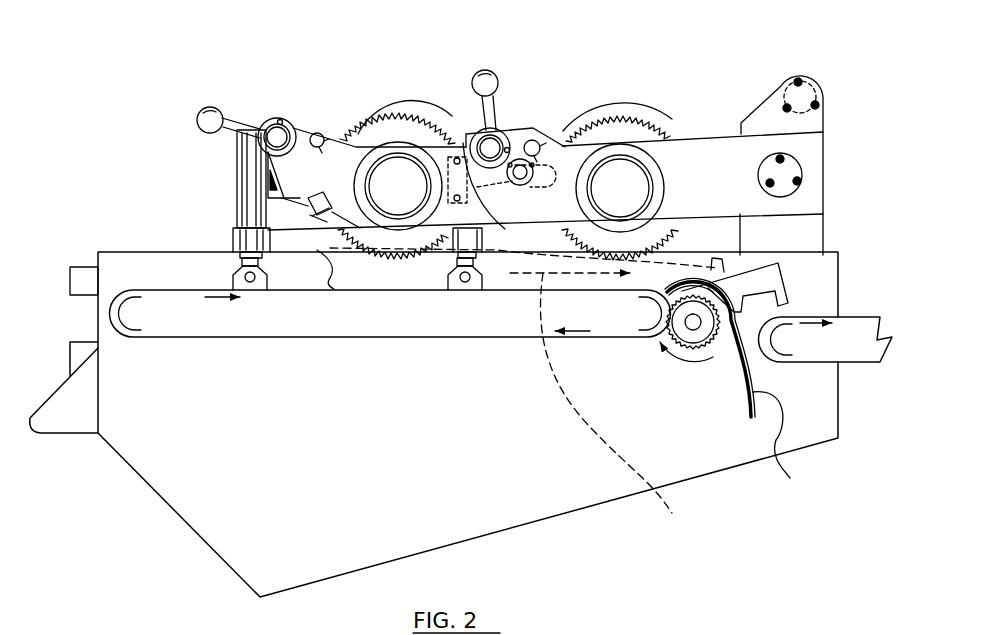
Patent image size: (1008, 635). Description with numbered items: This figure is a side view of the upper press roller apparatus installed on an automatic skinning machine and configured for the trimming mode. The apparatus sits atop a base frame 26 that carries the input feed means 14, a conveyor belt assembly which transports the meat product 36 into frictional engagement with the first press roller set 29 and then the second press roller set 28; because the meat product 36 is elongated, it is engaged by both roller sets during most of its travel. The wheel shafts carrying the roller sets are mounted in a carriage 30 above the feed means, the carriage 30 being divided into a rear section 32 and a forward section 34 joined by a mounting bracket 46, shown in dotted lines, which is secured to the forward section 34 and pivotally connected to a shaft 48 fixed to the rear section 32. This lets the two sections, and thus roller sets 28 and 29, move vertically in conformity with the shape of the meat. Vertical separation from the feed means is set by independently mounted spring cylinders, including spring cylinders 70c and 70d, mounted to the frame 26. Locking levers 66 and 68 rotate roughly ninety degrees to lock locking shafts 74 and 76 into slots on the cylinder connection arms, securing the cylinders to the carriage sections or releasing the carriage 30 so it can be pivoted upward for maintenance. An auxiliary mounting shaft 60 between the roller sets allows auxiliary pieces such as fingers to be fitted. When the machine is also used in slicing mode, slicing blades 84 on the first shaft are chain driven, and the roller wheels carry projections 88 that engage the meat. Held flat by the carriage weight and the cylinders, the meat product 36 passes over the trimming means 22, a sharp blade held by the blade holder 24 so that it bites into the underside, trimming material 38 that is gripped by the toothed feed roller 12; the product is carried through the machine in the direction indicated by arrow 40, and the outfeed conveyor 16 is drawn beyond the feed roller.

The feed roller 12 is at (688, 345).
The input feed means 14 is at (137, 306).
The outfeed conveyor 16 is at (855, 367).
The trimming means 22 is at (722, 284).
The blade holder 24 is at (802, 300).
The base frame 26 is at (481, 541).
The second press roller set 28 is at (632, 95).
The first press roller set 29 is at (405, 95).
The carriage 30 is at (704, 134).
The carriage rear section 32 is at (736, 123).
The carriage forward section 34 is at (274, 196).
The meat product 36 is at (343, 275).
The trimmed material 38 is at (786, 444).
The direction arrow 40 is at (618, 410).
The mounting bracket 46 is at (445, 152).
The shaft 48 is at (519, 166).
The auxiliary mounting shaft 60 is at (566, 124).
The locking lever 66 is at (211, 105).
The locking lever 68 is at (477, 64).
The spring cylinder 70c is at (233, 160).
The spring cylinder 70d is at (447, 261).
The locking shaft 74 is at (283, 119).
The locking shaft 76 is at (490, 129).
The slicing blades 84 is at (352, 117).
The projections 88 is at (661, 124).